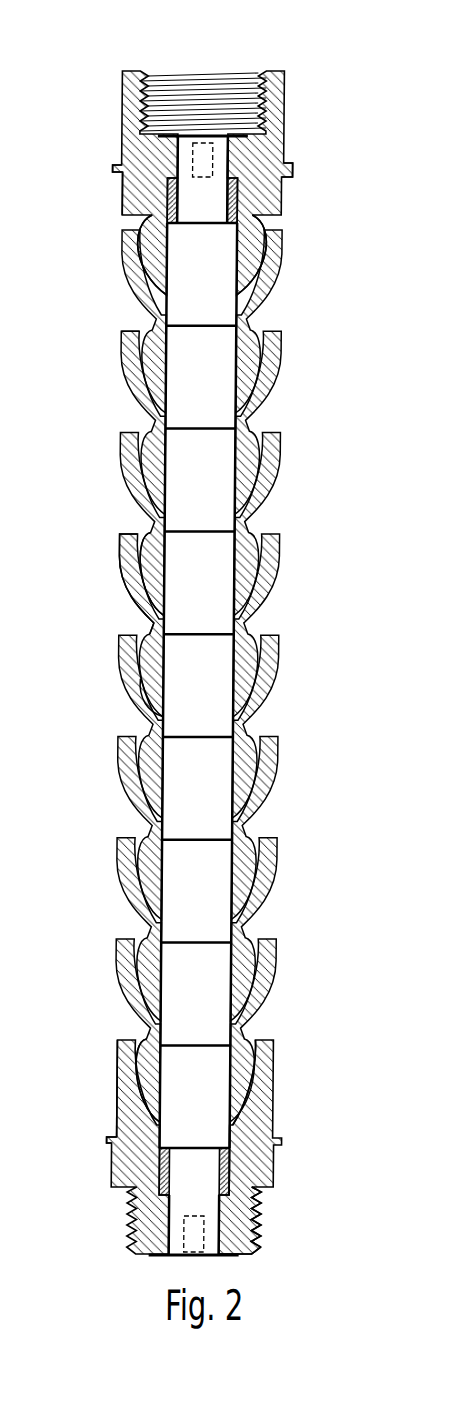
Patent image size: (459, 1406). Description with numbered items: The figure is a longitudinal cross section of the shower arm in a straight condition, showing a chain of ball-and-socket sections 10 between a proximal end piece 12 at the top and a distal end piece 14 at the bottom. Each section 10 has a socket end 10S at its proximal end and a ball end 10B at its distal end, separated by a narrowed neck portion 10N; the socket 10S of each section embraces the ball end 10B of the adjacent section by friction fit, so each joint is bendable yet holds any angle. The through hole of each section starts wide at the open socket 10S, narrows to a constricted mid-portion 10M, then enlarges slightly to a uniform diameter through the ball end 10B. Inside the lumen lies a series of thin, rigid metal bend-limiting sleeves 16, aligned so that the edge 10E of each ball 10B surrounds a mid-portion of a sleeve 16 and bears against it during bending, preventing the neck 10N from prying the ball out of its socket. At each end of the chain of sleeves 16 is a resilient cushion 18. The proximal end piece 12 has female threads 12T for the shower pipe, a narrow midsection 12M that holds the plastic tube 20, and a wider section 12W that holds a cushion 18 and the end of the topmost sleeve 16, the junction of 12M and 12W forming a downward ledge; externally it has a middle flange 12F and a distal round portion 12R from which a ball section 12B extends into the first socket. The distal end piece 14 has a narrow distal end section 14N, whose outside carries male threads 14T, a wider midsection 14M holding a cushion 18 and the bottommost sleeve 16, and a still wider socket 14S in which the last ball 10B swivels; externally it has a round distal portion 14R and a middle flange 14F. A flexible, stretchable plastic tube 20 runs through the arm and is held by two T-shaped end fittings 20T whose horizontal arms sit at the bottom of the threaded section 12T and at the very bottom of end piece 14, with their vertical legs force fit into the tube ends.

The ball-and-socket section 10 is at (122, 449).
The ball end 10B is at (151, 527).
The socket end 10S is at (126, 557).
The neck portion 10N is at (152, 632).
The constricted mid-portion 10M is at (156, 313).
The edge of ball end 10E is at (161, 704).
The proximal end piece 12 is at (289, 101).
The female threads 12T is at (181, 80).
The middle flange 12F is at (114, 169).
The wider section 12W is at (124, 196).
The narrow midsection 12M is at (236, 149).
The distal round portion 12R is at (284, 191).
The ball section 12B is at (142, 262).
The distal end piece 14 is at (120, 1182).
The socket 14S is at (267, 1079).
The round distal portion 14R is at (127, 1112).
The middle flange 14F is at (117, 1149).
The midsection 14M is at (244, 1141).
The male threads 14T is at (272, 1218).
The narrow distal end section 14N is at (250, 1255).
The bend-limiting sleeve 16 is at (185, 815).
The resilient cushion 18 is at (242, 215).
The flexible plastic tube 20 is at (183, 1228).
The T-shaped end fitting 20T is at (256, 138).